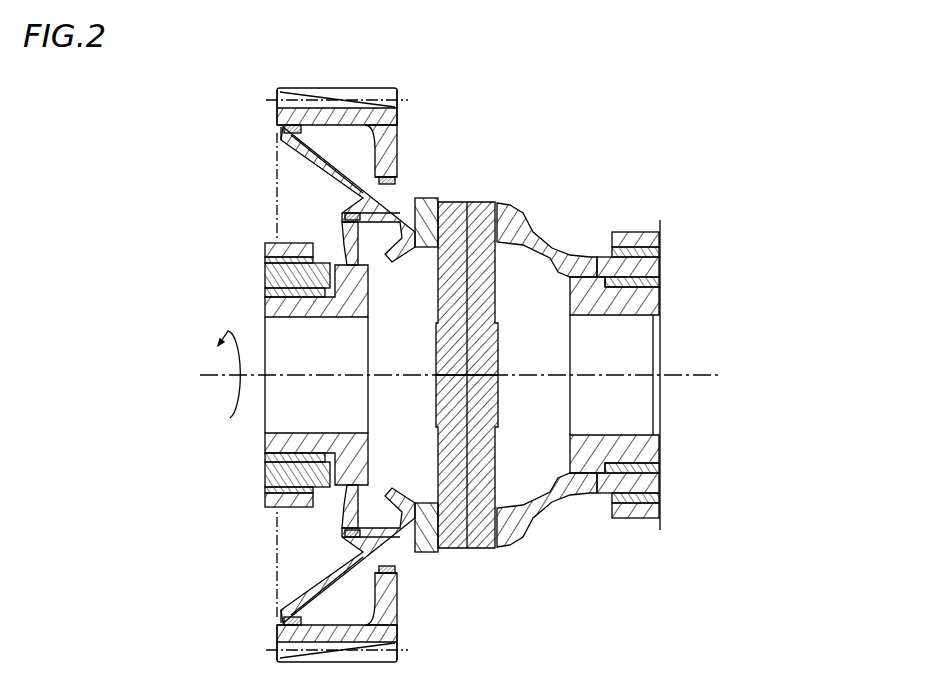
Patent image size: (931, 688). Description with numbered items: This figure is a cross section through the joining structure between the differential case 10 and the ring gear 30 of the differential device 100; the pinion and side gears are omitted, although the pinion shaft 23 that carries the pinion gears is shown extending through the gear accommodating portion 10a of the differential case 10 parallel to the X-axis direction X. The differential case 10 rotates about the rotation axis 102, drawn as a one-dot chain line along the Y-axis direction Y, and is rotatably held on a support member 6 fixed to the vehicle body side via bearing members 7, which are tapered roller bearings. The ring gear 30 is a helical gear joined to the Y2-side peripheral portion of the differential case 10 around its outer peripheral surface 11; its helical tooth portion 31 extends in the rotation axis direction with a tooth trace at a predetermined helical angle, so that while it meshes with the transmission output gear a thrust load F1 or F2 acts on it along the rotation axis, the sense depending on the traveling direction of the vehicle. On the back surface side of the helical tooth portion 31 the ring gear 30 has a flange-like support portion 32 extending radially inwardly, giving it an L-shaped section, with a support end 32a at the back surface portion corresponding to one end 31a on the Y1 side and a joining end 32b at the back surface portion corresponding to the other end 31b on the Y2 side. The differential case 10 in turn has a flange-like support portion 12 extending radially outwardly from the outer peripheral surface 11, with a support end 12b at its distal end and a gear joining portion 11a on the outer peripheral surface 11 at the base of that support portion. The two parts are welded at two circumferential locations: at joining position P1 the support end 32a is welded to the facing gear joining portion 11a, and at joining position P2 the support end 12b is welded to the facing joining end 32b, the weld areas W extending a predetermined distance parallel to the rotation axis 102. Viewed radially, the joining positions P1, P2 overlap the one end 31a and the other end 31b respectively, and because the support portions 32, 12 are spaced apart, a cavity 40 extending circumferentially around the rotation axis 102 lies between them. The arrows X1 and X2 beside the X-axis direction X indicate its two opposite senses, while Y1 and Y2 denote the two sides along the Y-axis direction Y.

The differential device 100 is at (88, 85).
The rotation axis 102 is at (216, 388).
The differential case 10 is at (553, 262).
The gear accommodating portion 10a is at (568, 322).
The outer peripheral surface 11 is at (420, 250).
The gear joining portion 11a is at (350, 200).
The support portion 12 is at (330, 160).
The support end 12b is at (287, 134).
The pinion shaft 23 is at (497, 270).
The ring gear 30 is at (408, 120).
The helical tooth portion 31 is at (385, 85).
The one end 31a is at (398, 92).
The other end 31b is at (278, 92).
The support portion 32 is at (398, 140).
The support end 32a is at (398, 165).
The joining end 32b is at (277, 126).
The cavity 40 is at (348, 214).
The support member 6 is at (265, 250).
The bearing members 7 is at (265, 275).
The weld areas W is at (284, 134).
The joining position P1 is at (402, 178).
The joining position P2 is at (268, 127).
The thrust load F1 is at (413, 350).
The thrust load F2 is at (266, 351).
The X-axis direction X is at (828, 348).
The first axial direction X1 is at (842, 404).
The second axial direction X2 is at (860, 393).
The Y-axis direction Y is at (695, 625).
The Y1 side Y1 is at (640, 615).
The Y2 side Y2 is at (649, 601).